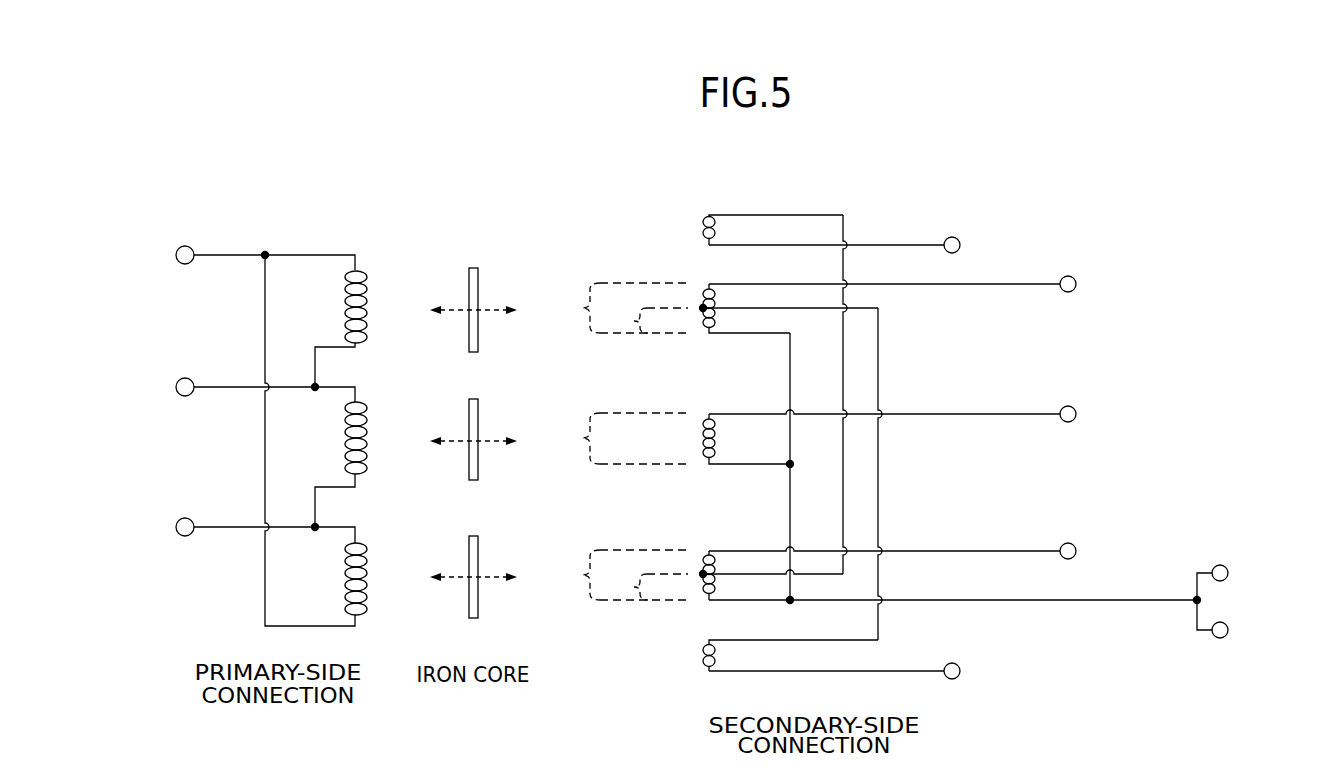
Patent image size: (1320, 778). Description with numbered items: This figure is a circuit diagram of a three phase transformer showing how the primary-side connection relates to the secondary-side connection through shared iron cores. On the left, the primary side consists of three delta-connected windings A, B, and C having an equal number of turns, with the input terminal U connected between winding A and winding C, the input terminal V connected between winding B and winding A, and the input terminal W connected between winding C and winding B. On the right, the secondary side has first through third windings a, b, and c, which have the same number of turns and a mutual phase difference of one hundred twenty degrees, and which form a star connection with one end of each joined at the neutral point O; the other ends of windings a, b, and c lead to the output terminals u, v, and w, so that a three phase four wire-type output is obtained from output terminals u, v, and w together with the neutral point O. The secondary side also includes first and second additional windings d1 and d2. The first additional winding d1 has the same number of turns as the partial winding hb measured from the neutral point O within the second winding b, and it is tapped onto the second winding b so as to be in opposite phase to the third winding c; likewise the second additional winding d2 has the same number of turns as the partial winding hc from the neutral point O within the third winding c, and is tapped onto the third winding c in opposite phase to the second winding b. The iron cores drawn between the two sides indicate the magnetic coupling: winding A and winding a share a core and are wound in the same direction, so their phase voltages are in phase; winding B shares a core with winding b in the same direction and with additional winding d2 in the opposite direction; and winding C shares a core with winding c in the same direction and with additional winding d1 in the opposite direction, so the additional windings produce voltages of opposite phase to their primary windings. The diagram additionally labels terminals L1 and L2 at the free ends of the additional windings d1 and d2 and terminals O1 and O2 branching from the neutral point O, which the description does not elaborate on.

The input terminal W is at (251, 257).
The input terminal U is at (252, 388).
The input terminal V is at (252, 529).
The third winding C is at (358, 329).
The first winding A is at (358, 464).
The second winding B is at (373, 579).
The third winding c is at (667, 308).
The first winding a is at (669, 440).
The second winding b is at (629, 575).
The partial winding hc is at (742, 319).
The partial winding hb is at (725, 585).
The first additional winding d1 is at (758, 230).
The second additional winding d2 is at (775, 655).
The output terminal L1 is at (970, 245).
The output terminal L2 is at (970, 671).
The output terminal w is at (1083, 284).
The output terminal u is at (1083, 414).
The output terminal v is at (1083, 551).
The neutral point O is at (790, 482).
The neutral output terminal O1 is at (1235, 573).
The neutral output terminal O2 is at (1235, 630).